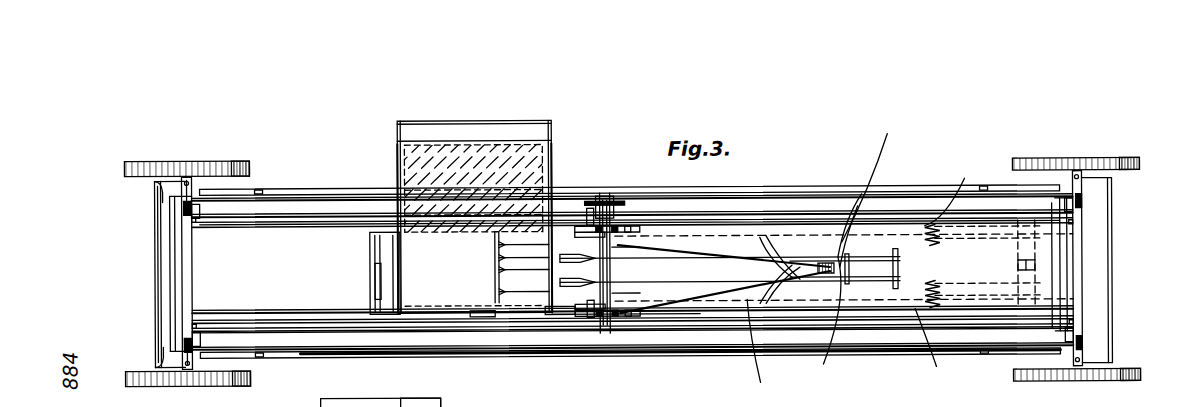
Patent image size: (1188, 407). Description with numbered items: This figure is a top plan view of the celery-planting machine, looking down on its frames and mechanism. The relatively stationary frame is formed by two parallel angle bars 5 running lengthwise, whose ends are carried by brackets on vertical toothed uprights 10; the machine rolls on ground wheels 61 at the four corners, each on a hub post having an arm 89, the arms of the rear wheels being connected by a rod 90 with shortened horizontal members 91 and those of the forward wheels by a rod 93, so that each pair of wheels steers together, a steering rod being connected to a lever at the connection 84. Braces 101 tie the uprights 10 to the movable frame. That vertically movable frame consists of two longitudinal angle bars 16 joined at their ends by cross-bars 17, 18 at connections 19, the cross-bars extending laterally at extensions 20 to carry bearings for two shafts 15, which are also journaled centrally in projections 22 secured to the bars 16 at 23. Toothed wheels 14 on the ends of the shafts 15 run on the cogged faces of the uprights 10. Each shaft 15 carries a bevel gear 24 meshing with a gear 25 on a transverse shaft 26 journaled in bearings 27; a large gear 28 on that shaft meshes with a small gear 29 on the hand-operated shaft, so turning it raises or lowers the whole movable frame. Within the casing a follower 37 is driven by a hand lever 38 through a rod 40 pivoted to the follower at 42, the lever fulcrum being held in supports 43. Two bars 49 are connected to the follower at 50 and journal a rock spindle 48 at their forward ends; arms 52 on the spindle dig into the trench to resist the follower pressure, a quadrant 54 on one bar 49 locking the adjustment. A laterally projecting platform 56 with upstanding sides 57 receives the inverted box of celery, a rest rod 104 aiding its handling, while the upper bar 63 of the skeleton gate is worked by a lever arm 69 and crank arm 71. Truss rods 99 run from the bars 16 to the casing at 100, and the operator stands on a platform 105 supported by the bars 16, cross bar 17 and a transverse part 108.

The angle bars 5 is at (866, 196).
The uprights 10 is at (190, 204).
The toothed wheels 14 is at (182, 220).
The shafts 15 is at (340, 212).
The angle bars 16 is at (318, 242).
The cross-bar 17 is at (1068, 262).
The cross-bar 18 is at (204, 276).
The connection 19 is at (203, 232).
The cross-bar extensions 20 is at (212, 209).
The projections 22 is at (588, 208).
The securing point 23 is at (608, 208).
The bevel gear 24 is at (614, 222).
The gear 25 is at (624, 228).
The transverse shaft 26 is at (625, 250).
The bearings 27 is at (630, 277).
The gear 28 is at (700, 270).
The small gear 29 is at (568, 256).
The follower 37 is at (492, 334).
The hand lever 38 is at (863, 229).
The rod 40 is at (712, 270).
The pivotal connection 42 is at (493, 266).
The supports 43 is at (784, 248).
The rock spindle 48 is at (868, 270).
The bars 49 is at (830, 255).
The connection 50 is at (493, 246).
The arms 52 is at (841, 289).
The quadrant 54 is at (870, 246).
The platform 56 is at (478, 188).
The sides 57 is at (398, 152).
The ground wheels 61 is at (125, 168).
The upper bar 63 is at (380, 286).
The lever arm 69 is at (553, 332).
The crank arm 71 is at (370, 296).
The connection 84 is at (370, 357).
The arm 89 is at (184, 204).
The rod 90 is at (157, 283).
The horizontal members 91 is at (158, 188).
The rod 93 is at (1113, 192).
The truss rods 99 is at (350, 218).
The connection 100 is at (542, 316).
The braces 101 is at (278, 190).
The rest rod 104 is at (460, 122).
The platform 105 is at (972, 275).
The transverse supporting part 108 is at (1036, 270).